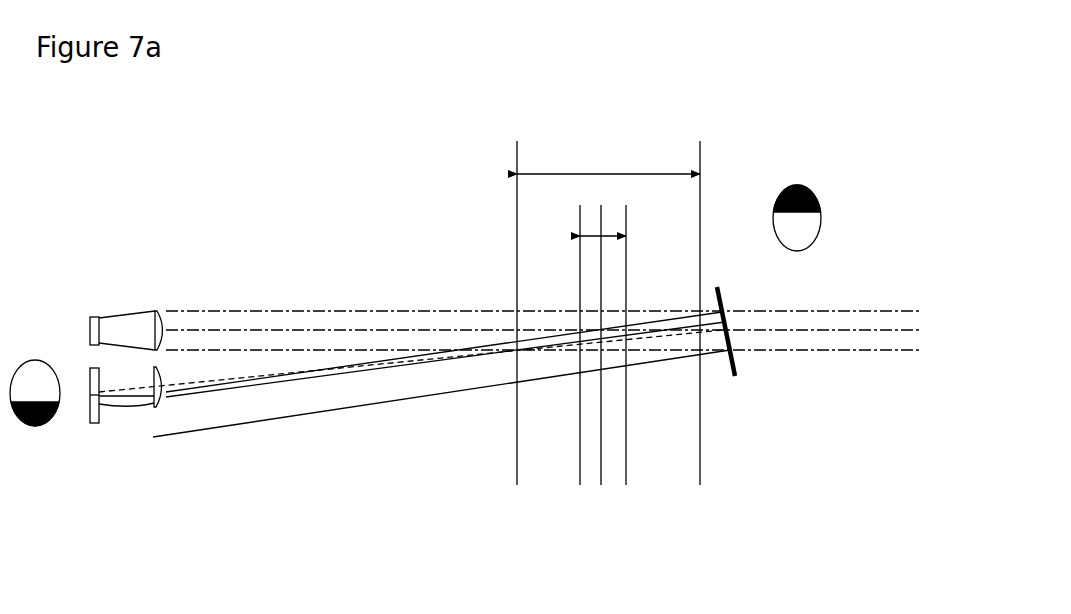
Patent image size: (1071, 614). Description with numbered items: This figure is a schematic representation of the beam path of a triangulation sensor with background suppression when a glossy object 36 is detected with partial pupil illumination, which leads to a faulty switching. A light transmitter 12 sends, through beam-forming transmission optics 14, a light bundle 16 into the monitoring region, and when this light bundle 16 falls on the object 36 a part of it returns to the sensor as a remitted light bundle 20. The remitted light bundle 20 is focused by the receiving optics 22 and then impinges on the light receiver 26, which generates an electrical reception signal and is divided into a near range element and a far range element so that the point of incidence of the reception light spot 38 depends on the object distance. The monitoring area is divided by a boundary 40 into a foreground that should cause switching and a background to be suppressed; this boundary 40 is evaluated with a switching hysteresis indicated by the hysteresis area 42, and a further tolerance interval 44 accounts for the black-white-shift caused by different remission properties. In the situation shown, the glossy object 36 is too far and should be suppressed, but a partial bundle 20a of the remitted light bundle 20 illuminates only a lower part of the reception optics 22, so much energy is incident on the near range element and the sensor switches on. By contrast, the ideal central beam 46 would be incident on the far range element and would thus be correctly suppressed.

The light transmitter 12 is at (121, 285).
The transmission optics 14 is at (188, 278).
The light bundle 16 is at (510, 305).
The remitted light bundle 20 is at (441, 389).
The partial bundle 20a is at (134, 449).
The receiving optics 22 is at (188, 431).
The light receiver 26 is at (69, 435).
The object 36 is at (743, 361).
The reception light spot 38 is at (31, 362).
The boundary 40 is at (608, 352).
The hysteresis area 42 is at (577, 218).
The tolerance interval 44 is at (608, 128).
The ideal central beam 46 is at (411, 331).